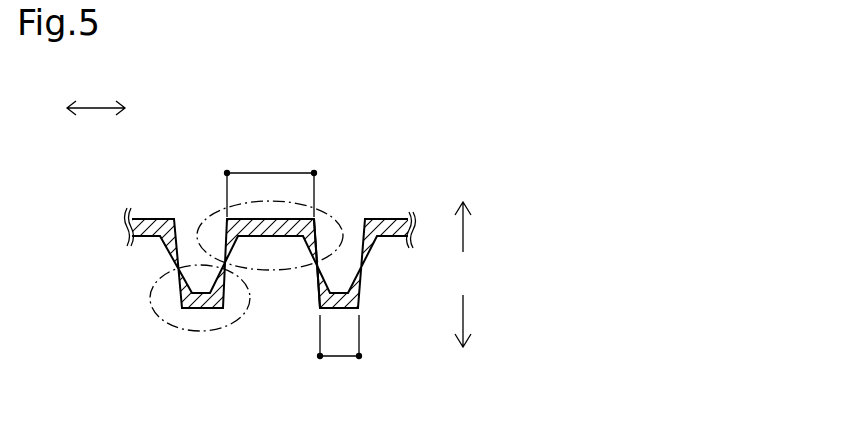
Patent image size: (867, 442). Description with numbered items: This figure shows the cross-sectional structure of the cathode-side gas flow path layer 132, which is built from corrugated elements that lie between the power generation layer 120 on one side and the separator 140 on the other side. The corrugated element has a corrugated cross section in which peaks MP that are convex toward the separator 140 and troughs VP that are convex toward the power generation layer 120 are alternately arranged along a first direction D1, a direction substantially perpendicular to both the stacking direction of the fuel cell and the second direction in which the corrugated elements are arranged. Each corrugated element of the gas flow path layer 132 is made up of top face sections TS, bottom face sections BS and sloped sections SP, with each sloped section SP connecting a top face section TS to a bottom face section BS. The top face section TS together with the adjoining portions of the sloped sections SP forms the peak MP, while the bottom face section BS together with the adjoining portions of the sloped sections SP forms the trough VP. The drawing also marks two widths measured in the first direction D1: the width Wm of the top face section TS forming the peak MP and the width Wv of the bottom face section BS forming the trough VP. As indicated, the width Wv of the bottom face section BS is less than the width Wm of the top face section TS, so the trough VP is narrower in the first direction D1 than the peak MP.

The cathode-side gas flow path layer 132 is at (420, 167).
The separator 140 is at (567, 227).
The power generation layer 120 is at (594, 326).
The top face section TS is at (253, 218).
The peak MP is at (324, 209).
The trough VP is at (165, 325).
The bottom face section BS is at (200, 307).
The sloped section SP is at (313, 270).
The width of the top face section Wm is at (271, 182).
The width of the bottom face section Wv is at (340, 351).
The first direction D1 is at (96, 95).